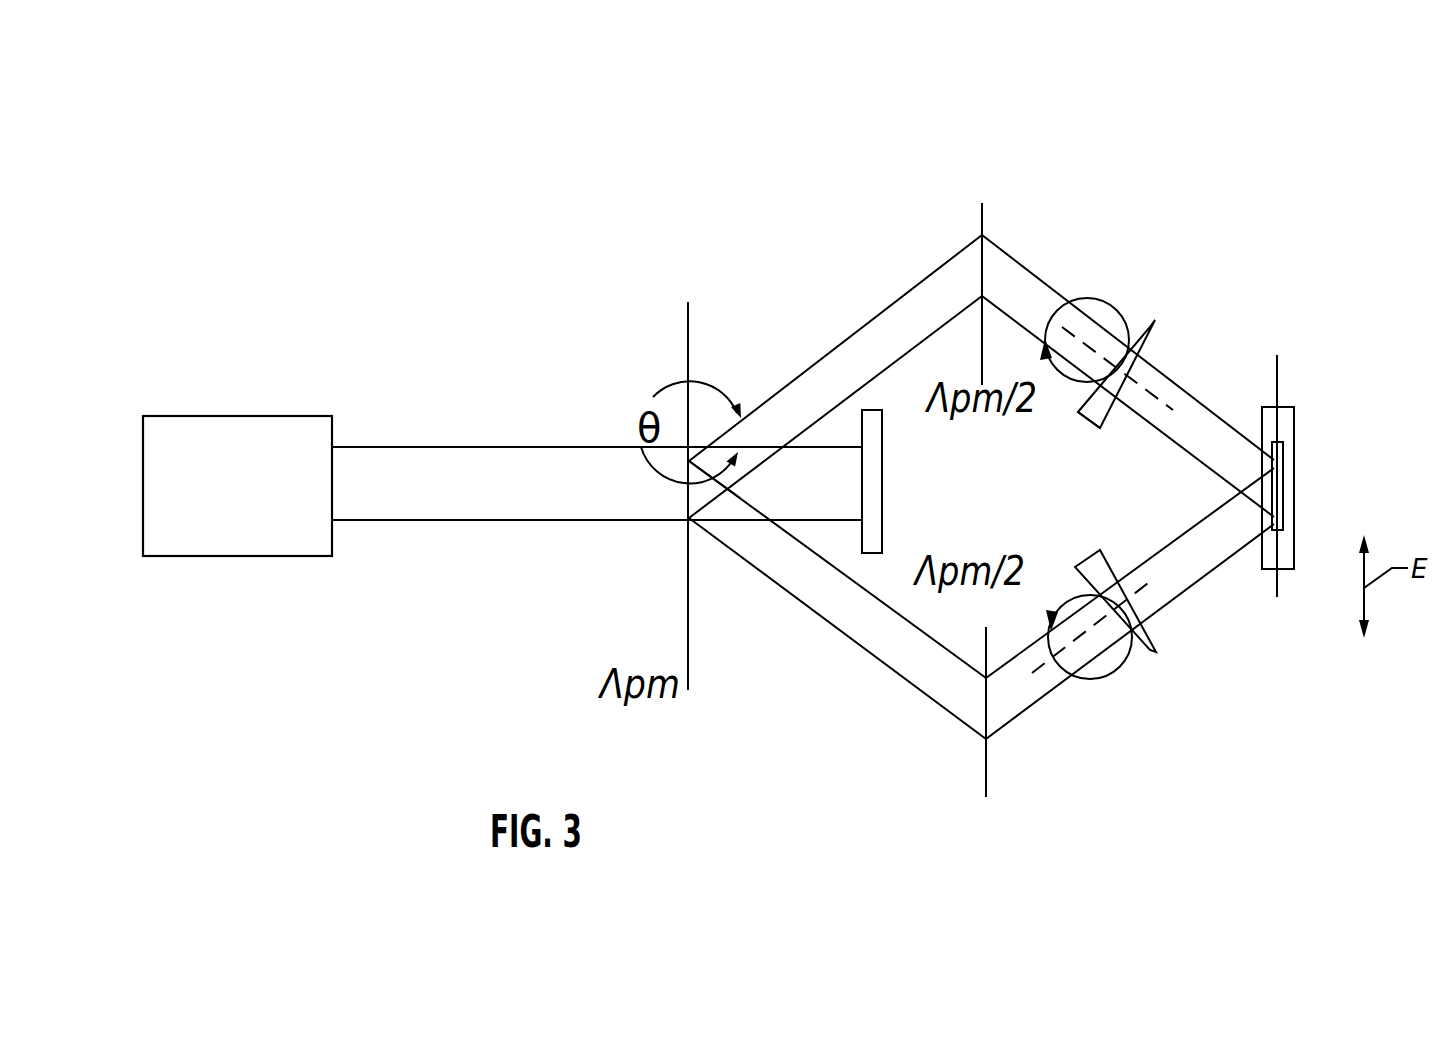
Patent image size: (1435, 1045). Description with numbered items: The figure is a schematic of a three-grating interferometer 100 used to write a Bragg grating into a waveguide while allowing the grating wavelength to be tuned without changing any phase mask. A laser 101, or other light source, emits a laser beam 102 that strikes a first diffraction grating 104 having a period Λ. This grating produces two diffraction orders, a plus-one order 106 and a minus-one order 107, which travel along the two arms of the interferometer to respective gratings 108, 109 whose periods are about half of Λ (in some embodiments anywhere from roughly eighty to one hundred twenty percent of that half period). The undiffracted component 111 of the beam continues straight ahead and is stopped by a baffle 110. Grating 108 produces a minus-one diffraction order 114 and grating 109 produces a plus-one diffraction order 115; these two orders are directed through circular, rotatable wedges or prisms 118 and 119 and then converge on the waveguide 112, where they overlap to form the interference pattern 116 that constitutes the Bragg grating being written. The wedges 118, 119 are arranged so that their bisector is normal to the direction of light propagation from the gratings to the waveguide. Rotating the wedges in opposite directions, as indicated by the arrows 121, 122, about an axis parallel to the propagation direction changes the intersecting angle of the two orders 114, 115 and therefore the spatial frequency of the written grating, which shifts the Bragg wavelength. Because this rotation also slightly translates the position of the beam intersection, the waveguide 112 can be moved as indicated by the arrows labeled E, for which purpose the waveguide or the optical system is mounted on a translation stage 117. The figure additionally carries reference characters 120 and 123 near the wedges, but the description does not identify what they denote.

The interferometer 100 is at (294, 236).
The laser 101 is at (237, 454).
The laser beam 102 is at (597, 454).
The first diffraction grating 104 is at (632, 483).
The diffraction order 106 is at (835, 376).
The diffraction order 107 is at (837, 600).
The grating 108 is at (926, 280).
The grating 109 is at (934, 721).
The baffle 110 is at (924, 481).
The undiffracted component 111 is at (758, 553).
The waveguide 112 is at (1328, 469).
The diffraction order 114 is at (1188, 351).
The diffraction order 115 is at (1147, 487).
The interference pattern 116 is at (1330, 482).
The translation stage 117 is at (1341, 499).
The wedge 118 is at (1057, 445).
The wedge 119 is at (1123, 575).
The first polarization axis 120 is at (1123, 321).
The arrow 121 is at (1103, 665).
The arrow 122 is at (1130, 321).
The second rotation indicator 123 is at (1129, 654).